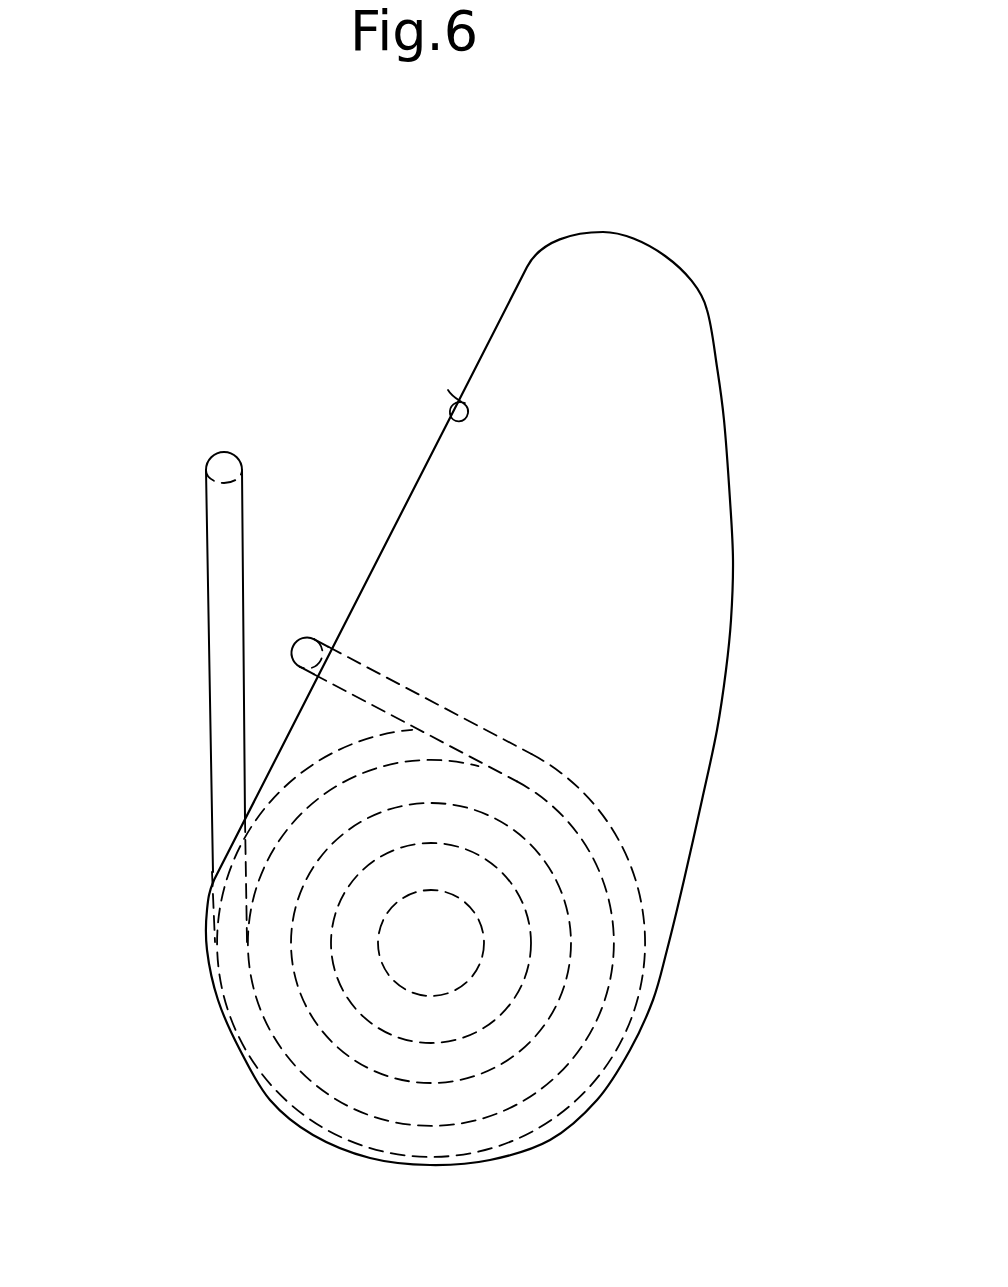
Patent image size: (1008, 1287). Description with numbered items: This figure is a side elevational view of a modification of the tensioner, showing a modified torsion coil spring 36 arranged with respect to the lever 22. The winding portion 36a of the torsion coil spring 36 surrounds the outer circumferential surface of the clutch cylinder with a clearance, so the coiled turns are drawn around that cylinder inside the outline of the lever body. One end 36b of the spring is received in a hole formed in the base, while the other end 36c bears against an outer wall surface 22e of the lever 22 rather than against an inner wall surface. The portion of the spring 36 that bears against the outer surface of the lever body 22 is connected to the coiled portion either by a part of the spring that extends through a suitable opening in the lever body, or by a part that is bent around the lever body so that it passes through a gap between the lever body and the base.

The lever 22 is at (683, 368).
The outer wall surface 22e is at (448, 390).
The torsion coil spring 36 is at (555, 780).
The winding portion 36a is at (302, 773).
The one end 36b is at (216, 466).
The other end 36c is at (306, 646).